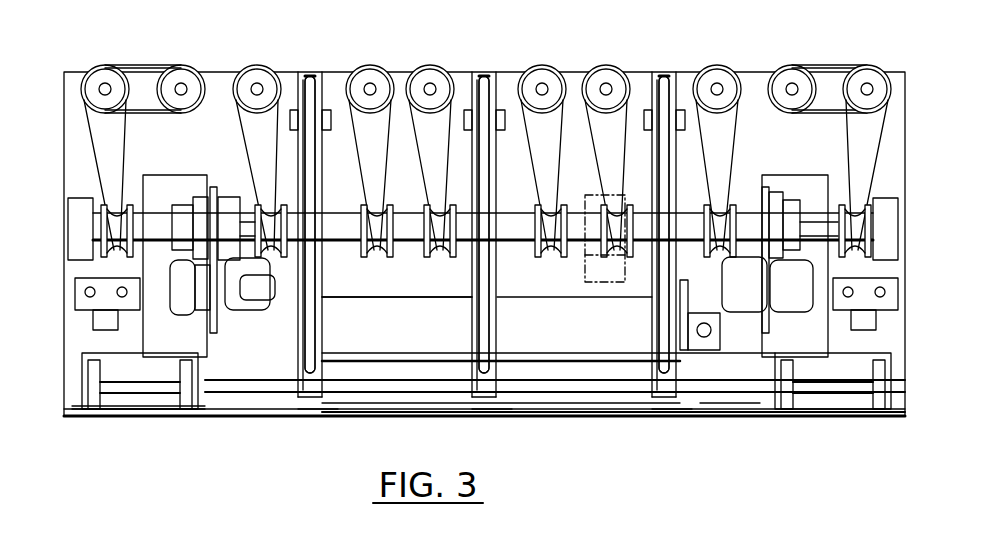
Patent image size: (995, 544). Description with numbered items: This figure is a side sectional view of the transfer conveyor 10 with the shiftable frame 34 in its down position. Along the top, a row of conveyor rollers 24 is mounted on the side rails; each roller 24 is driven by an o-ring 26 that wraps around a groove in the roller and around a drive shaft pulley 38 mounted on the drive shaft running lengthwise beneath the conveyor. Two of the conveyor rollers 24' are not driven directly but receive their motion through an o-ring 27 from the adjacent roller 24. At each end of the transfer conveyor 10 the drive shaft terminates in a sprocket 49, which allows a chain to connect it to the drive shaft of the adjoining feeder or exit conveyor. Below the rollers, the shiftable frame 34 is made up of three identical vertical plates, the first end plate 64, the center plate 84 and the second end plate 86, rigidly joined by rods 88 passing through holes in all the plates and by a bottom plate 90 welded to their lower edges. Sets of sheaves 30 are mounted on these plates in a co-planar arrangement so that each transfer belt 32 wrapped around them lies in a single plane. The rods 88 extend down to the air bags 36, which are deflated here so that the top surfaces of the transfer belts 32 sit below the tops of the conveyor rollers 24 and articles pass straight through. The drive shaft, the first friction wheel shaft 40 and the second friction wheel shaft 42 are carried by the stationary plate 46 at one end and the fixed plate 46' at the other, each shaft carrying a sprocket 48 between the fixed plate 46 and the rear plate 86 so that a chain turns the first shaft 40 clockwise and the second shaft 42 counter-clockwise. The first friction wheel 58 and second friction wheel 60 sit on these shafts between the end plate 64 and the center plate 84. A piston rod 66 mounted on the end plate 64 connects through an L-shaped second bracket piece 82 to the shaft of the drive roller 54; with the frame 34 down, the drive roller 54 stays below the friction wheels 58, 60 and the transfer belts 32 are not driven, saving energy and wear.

The transfer conveyor 10 is at (588, 418).
The conveyor roller 24 is at (329, 61).
The conveyor roller 24' is at (486, 61).
The o-ring 26 is at (247, 128).
The o-ring 27 is at (137, 66).
The sheave 30 is at (325, 74).
The transfer belt 32 is at (312, 78).
The shiftable frame 34 is at (300, 405).
The air bag 36 is at (135, 400).
The drive shaft pulley 38 is at (362, 257).
The first friction wheel shaft 40 is at (235, 325).
The second friction wheel shaft 42 is at (262, 325).
The stationary plate 46 is at (199, 266).
The fixed plate 46' is at (780, 266).
The sprocket 48 is at (238, 182).
The sprocket 49 is at (80, 210).
The drive roller 54 is at (424, 337).
The first friction wheel 58 is at (588, 258).
The second friction wheel 60 is at (592, 282).
The first end plate 64 is at (680, 80).
The piston rod 66 is at (718, 345).
The second bracket piece 82 is at (703, 313).
The center plate 84 is at (478, 78).
The second end plate 86 is at (305, 78).
The rod 88 is at (746, 400).
The bottom plate 90 is at (396, 416).